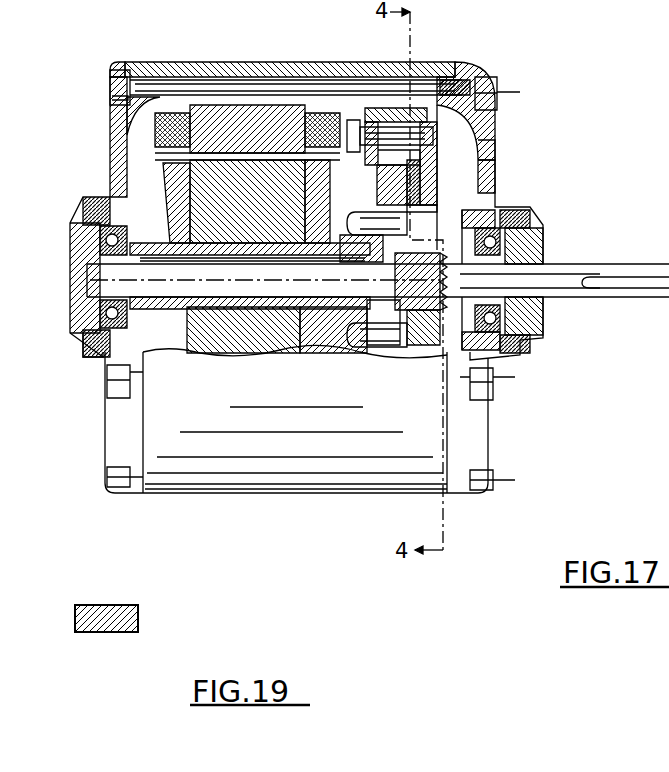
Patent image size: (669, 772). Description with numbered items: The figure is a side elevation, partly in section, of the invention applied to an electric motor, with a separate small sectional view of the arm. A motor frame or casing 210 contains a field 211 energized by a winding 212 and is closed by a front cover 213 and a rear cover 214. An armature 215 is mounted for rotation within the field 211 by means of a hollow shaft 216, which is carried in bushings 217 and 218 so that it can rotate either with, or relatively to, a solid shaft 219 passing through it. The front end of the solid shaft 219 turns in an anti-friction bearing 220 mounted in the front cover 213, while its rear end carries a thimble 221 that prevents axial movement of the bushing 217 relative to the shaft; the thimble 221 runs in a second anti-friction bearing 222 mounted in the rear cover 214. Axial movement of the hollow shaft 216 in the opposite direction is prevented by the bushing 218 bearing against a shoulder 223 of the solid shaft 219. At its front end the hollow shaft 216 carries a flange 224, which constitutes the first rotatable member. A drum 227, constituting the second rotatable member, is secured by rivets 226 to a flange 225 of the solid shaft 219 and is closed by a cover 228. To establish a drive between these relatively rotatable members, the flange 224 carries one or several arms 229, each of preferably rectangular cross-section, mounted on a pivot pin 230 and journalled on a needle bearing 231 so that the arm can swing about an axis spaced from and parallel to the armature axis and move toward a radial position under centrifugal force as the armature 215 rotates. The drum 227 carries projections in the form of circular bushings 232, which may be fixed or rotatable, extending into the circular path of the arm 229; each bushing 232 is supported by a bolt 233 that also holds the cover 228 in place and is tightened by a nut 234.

In FIG. 17, the motor frame or casing 210 is at (242, 63).
In FIG. 17, the field 211 is at (203, 108).
In FIG. 17, the winding 212 is at (155, 128).
In FIG. 17, the front cover 213 is at (495, 190).
In FIG. 17, the rear cover 214 is at (113, 172).
In FIG. 17, the armature 215 is at (223, 332).
In FIG. 17, the hollow shaft 216 is at (273, 307).
In FIG. 17, the bushing 217 is at (172, 353).
In FIG. 17, the bushing 218 is at (323, 297).
In FIG. 17, the solid shaft 219 is at (620, 300).
In FIG. 17, the anti-friction bearing 220 is at (540, 238).
In FIG. 17, the thimble 221 is at (80, 300).
In FIG. 17, the second anti-friction bearing 222 is at (100, 240).
In FIG. 17, the shoulder 223 is at (450, 270).
In FIG. 17, the flange 224 is at (365, 183).
In FIG. 17, the flange 225 is at (418, 333).
In FIG. 17, the rivets 226 is at (438, 347).
In FIG. 17, the drum 227 is at (493, 150).
In FIG. 17, the cover 228 is at (360, 108).
In FIG. 17, the arm 229 is at (420, 165).
In FIG. 19, the arm 229 is at (115, 605).
In FIG. 17, the pivot pin 230 is at (400, 205).
In FIG. 17, the needle bearing 231 is at (430, 190).
In FIG. 17, the circular bushings 232 is at (387, 108).
In FIG. 17, the bolt 233 is at (423, 110).
In FIG. 17, the nut 234 is at (495, 128).